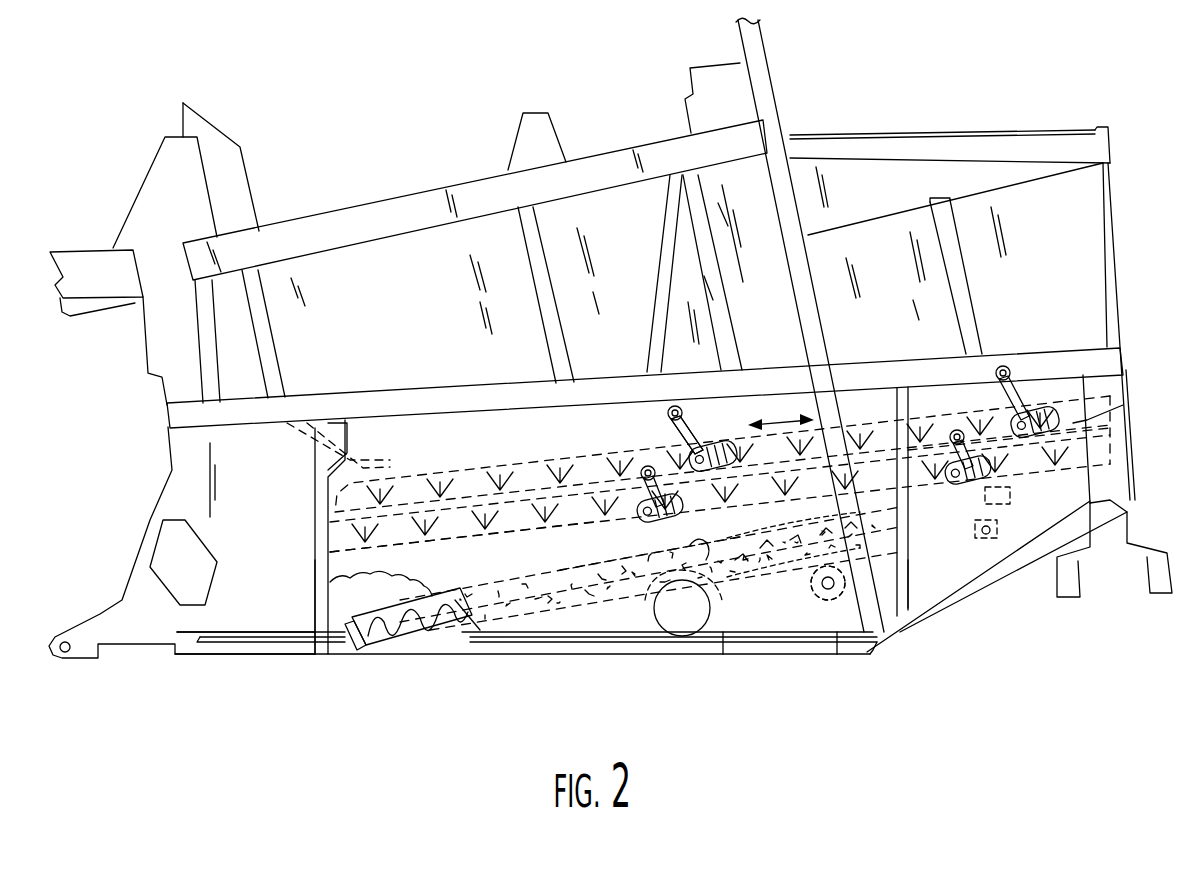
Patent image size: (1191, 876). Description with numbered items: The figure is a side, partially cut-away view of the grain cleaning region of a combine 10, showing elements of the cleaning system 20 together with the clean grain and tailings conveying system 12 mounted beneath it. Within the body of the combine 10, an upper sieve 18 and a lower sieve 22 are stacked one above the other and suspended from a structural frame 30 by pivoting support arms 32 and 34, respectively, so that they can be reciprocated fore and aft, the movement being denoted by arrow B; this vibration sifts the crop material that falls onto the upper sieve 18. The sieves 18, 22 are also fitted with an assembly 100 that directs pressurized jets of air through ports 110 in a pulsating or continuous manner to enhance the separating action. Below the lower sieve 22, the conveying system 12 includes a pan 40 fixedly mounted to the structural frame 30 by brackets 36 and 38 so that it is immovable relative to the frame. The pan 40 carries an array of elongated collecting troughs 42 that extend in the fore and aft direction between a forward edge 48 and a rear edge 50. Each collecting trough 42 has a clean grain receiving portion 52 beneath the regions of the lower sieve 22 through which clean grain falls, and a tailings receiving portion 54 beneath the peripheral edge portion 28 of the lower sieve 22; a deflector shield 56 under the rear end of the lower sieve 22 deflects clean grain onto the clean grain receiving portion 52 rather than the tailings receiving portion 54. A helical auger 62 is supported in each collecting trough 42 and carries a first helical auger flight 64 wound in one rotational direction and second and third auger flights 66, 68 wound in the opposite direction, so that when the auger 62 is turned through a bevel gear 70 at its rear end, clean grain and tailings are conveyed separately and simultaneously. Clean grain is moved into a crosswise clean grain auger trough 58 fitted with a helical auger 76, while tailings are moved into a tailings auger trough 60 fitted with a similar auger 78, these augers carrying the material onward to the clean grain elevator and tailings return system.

The combine 10 is at (1038, 102).
The clean grain and tailings conveying system 12 is at (386, 660).
The upper sieve 18 is at (1123, 405).
The cleaning system 20 is at (968, 410).
The lower sieve 22 is at (340, 530).
The peripheral edge portion 28 is at (917, 473).
The structural frame 30 is at (1122, 323).
The pivoting support arm 32 is at (688, 425).
The pivoting support arm 34 is at (650, 468).
The bracket 36 is at (998, 537).
The bracket 38 is at (430, 645).
The pan 40 is at (368, 656).
The collecting trough 42 is at (603, 603).
The forward edge 48 is at (315, 620).
The rear edge 50 is at (993, 500).
The clean grain receiving portion 52 is at (557, 613).
The tailings receiving portion 54 is at (960, 552).
The deflector shield 56 is at (817, 508).
The clean grain auger trough 58 is at (660, 643).
The tailings auger trough 60 is at (800, 595).
The helical auger 62 is at (385, 607).
The first helical auger flight 64 is at (487, 610).
The second helical auger flight 66 is at (705, 560).
The third auger flight 68 is at (937, 523).
The bevel gear 70 is at (990, 513).
The helical auger 76 is at (707, 593).
The auger 78 is at (818, 603).
The assembly 100 is at (447, 440).
The port 110 is at (447, 488).
The arrow B is at (785, 420).